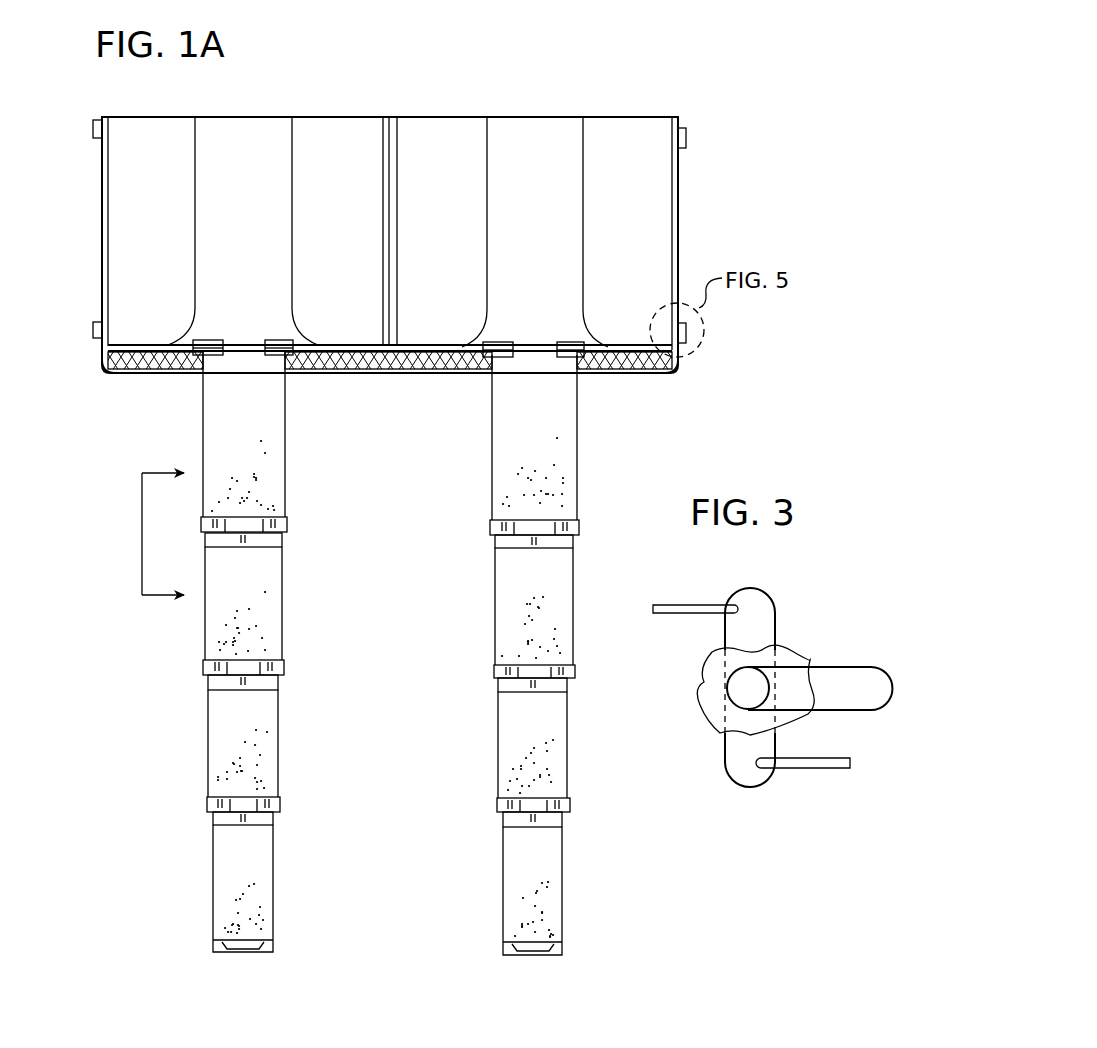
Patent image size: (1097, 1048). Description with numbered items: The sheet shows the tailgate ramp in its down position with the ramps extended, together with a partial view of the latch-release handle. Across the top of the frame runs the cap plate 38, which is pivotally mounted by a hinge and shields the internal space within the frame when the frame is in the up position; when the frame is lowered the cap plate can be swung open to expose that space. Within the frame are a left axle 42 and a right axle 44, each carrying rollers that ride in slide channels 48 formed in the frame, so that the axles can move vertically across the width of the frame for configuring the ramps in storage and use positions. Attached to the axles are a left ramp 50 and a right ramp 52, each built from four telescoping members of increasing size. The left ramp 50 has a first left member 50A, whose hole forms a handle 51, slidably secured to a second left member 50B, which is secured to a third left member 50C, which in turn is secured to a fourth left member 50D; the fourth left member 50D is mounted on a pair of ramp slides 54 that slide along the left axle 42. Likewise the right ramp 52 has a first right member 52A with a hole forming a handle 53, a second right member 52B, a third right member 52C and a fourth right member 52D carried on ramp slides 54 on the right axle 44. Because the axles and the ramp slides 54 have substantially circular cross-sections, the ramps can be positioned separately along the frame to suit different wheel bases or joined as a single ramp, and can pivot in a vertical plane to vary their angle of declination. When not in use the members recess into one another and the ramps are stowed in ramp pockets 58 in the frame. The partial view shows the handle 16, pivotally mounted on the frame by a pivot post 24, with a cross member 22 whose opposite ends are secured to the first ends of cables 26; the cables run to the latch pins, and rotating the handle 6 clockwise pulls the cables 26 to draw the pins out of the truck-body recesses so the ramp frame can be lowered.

In FIG. 1A, the handle 6 is at (151, 535).
In FIG. 3, the handle 16 is at (826, 636).
In FIG. 3, the cross member 22 is at (763, 605).
In FIG. 3, the pivot post 24 is at (738, 688).
In FIG. 3, the cables 26 is at (705, 605).
In FIG. 1A, the cap plate 38 is at (158, 372).
In FIG. 1A, the left axle 42 is at (110, 368).
In FIG. 1A, the right axle 44 is at (645, 373).
In FIG. 1A, the slide channels 48 is at (102, 222).
In FIG. 1A, the left ramp 50 is at (295, 673).
In FIG. 1A, the first left member 50A is at (243, 882).
In FIG. 1A, the second left member 50B is at (243, 743).
In FIG. 1A, the third left member 50C is at (243, 604).
In FIG. 1A, the fourth left member 50D is at (244, 442).
In FIG. 1A, the handle 51 is at (247, 952).
In FIG. 1A, the right ramp 52 is at (484, 675).
In FIG. 1A, the first right member 52A is at (532, 883).
In FIG. 1A, the second right member 52B is at (533, 745).
In FIG. 1A, the third right member 52C is at (534, 606).
In FIG. 1A, the fourth right member 52D is at (534, 445).
In FIG. 1A, the handle 53 is at (542, 955).
In FIG. 1A, the ramp slides 54 is at (278, 340).
In FIG. 1A, the ramp pockets 58 is at (257, 209).